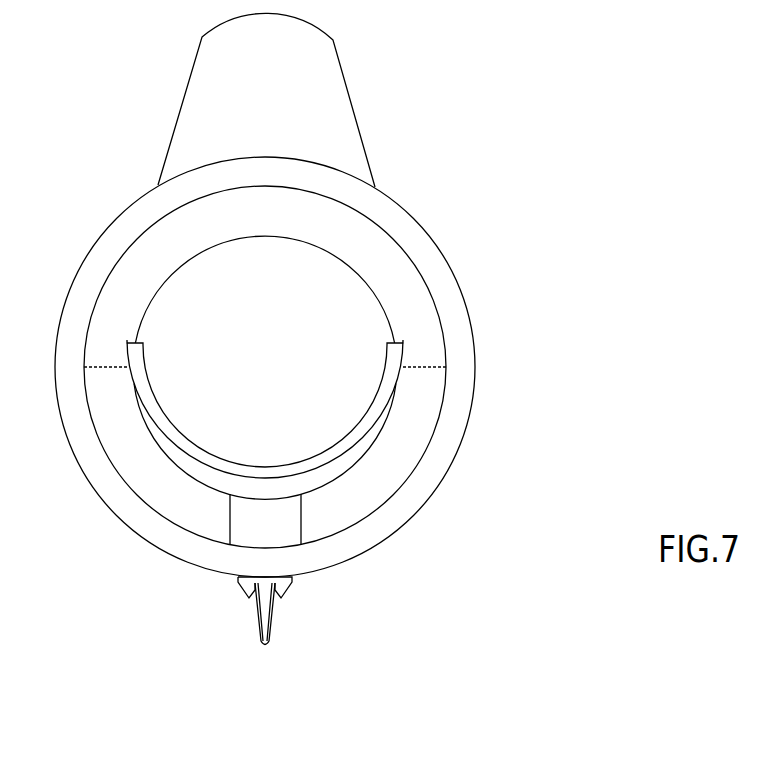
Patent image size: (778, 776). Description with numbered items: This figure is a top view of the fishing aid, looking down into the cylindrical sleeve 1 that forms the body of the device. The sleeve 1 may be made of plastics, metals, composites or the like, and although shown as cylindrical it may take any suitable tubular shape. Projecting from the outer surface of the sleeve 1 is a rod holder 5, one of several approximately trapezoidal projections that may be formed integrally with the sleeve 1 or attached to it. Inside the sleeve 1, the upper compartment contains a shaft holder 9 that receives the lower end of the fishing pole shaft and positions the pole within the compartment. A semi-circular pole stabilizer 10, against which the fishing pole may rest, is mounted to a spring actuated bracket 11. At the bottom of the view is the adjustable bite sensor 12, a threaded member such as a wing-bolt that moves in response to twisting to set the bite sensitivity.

The cylindrical sleeve 1 is at (131, 204).
The rod holder 5 is at (184, 98).
The shaft holder 9 is at (157, 290).
The pole stabilizer 10 is at (138, 402).
The spring actuated bracket 11 is at (230, 518).
The adjustable bite sensor 12 is at (260, 623).